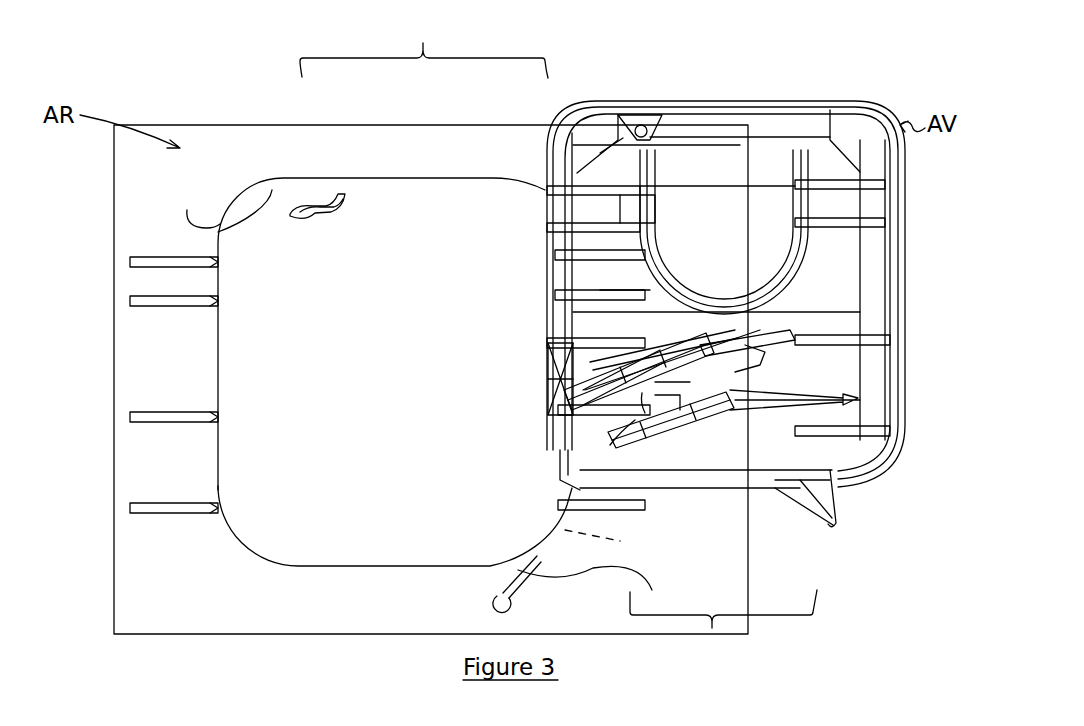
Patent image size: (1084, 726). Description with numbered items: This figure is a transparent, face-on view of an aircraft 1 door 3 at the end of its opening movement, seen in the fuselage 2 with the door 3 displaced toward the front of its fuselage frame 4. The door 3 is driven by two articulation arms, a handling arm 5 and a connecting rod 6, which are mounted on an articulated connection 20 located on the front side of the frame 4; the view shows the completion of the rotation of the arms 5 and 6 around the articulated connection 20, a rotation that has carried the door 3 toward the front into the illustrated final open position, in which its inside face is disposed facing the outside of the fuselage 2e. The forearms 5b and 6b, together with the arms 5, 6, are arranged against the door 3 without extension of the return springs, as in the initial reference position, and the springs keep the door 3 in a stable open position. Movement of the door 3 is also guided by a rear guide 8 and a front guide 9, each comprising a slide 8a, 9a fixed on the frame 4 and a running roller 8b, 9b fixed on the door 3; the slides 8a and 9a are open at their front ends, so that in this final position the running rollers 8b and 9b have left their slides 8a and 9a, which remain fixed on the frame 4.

The aircraft 1 is at (118, 77).
The fuselage 2 is at (172, 182).
The outside of the fuselage 2e is at (560, 527).
The door 3 is at (916, 268).
The fuselage frame 4 is at (272, 190).
The handling arm 5 is at (607, 353).
The forearm 5b is at (700, 338).
The connecting rod 6 is at (573, 440).
The forearm 6b is at (860, 400).
The rear guide 8 is at (424, 44).
The slide 8a is at (316, 194).
The running roller 8b is at (640, 131).
The front guide 9 is at (723, 630).
The slide 9a is at (595, 591).
The running roller 9b is at (830, 523).
The articulated connection 20 is at (548, 374).